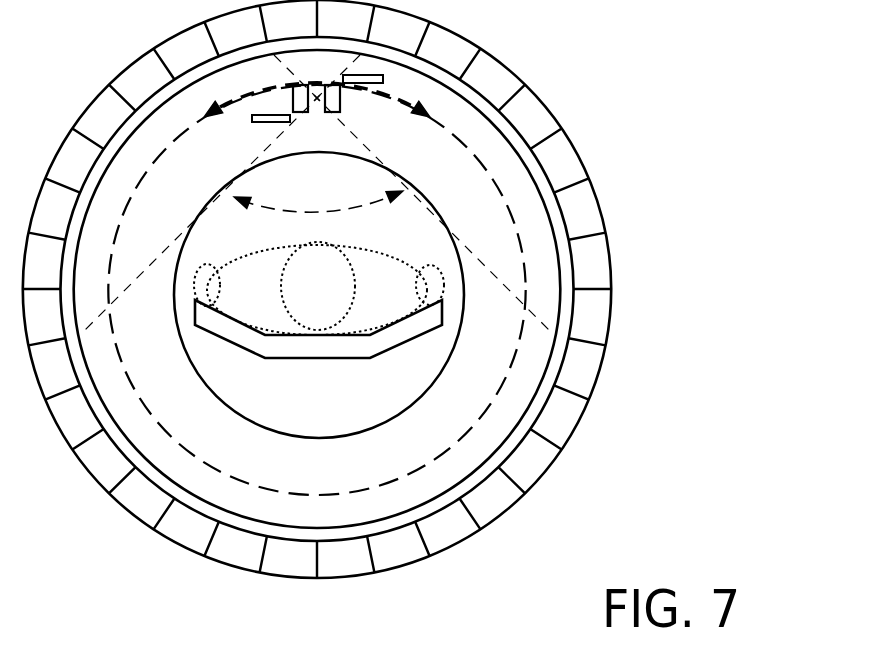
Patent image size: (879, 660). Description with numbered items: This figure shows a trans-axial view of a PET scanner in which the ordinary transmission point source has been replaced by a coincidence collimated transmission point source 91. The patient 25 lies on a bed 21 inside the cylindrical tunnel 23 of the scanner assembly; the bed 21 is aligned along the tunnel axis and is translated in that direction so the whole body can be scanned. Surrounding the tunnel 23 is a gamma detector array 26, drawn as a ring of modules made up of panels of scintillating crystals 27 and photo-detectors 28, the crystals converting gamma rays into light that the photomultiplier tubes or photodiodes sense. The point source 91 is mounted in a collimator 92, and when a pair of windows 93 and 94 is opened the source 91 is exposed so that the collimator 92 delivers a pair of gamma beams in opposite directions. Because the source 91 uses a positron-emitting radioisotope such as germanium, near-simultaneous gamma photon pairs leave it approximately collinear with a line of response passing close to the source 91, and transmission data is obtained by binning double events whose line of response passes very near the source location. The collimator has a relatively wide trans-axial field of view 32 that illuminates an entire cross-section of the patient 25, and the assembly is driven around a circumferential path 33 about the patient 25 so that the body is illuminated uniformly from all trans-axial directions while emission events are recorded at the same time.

The bed 21 is at (302, 358).
The tunnel 23 is at (360, 435).
The patient 25 is at (280, 247).
The gamma detector array 26 is at (503, 60).
The scintillating crystals 27 is at (568, 272).
The photo-detectors 28 is at (593, 278).
The field of view 32 is at (343, 210).
The circumferential path 33 is at (488, 167).
The coincidence collimated transmission point source 91 is at (315, 95).
The collimator 92 is at (333, 113).
The window 93 is at (280, 122).
The window 94 is at (381, 81).